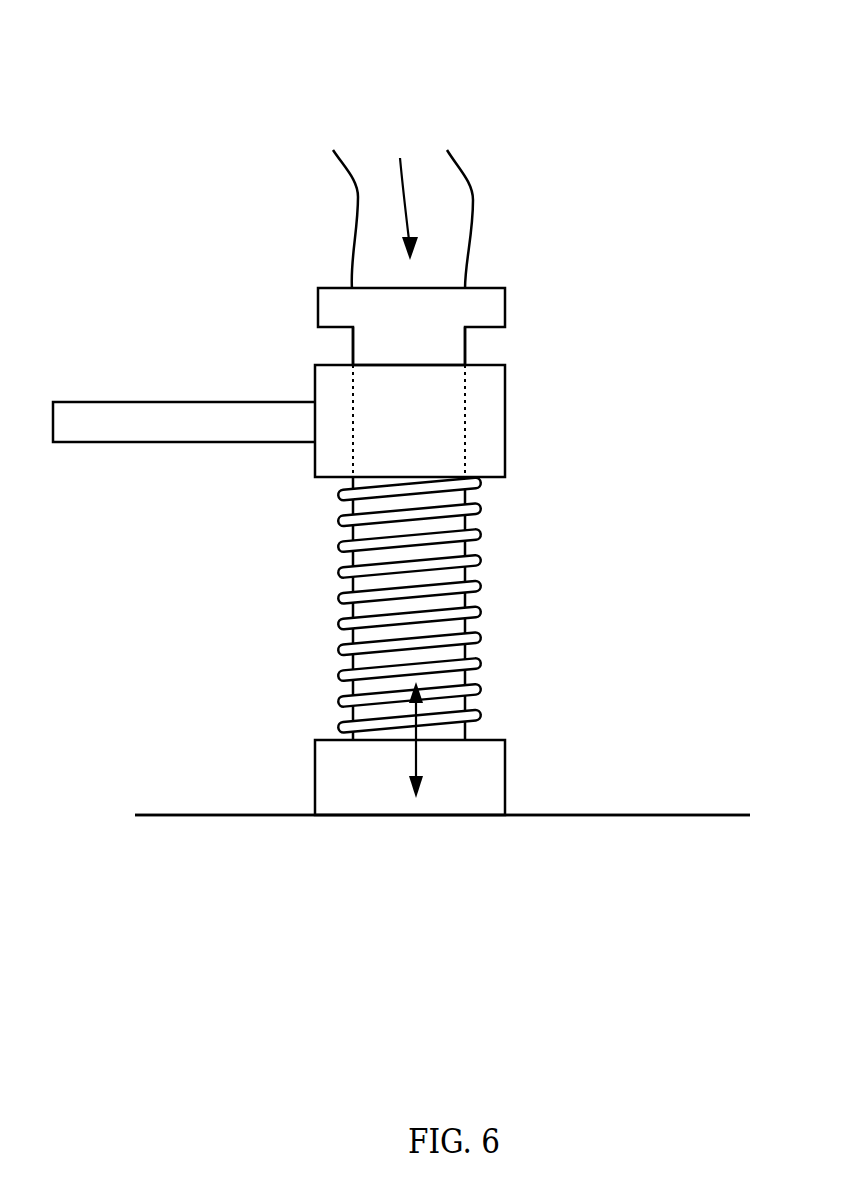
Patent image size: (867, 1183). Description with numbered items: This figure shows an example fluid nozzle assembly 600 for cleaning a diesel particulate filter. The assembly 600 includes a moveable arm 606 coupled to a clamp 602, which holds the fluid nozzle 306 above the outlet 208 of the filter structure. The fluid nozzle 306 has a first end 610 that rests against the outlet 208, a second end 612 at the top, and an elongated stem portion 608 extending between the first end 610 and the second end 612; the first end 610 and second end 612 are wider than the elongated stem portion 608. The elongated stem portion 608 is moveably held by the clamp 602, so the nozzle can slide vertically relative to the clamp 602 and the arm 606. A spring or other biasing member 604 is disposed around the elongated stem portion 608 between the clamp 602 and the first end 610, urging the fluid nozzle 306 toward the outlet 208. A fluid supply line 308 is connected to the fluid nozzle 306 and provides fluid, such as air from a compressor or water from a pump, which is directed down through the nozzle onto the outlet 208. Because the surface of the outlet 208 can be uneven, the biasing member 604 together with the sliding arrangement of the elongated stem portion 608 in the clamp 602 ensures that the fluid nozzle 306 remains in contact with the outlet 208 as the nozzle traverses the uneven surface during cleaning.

The fluid nozzle assembly 600 is at (652, 100).
The outlet 208 is at (690, 792).
The fluid supply line 308 is at (463, 176).
The second end 612 is at (505, 316).
The elongated stem portion 608 is at (467, 348).
The clamp 602 is at (505, 418).
The moveable arm 606 is at (185, 402).
The biasing member 604 is at (478, 530).
The fluid nozzle 306 is at (522, 634).
The first end 610 is at (505, 762).